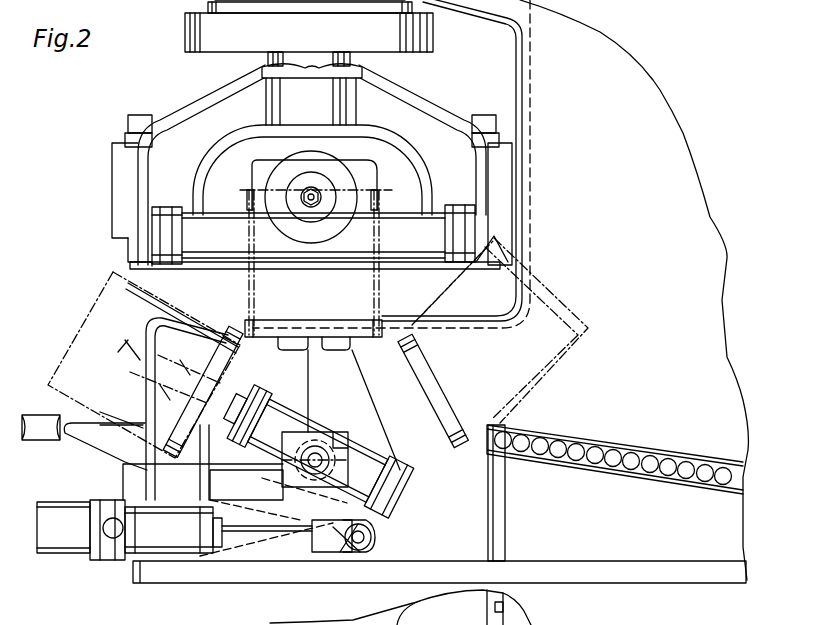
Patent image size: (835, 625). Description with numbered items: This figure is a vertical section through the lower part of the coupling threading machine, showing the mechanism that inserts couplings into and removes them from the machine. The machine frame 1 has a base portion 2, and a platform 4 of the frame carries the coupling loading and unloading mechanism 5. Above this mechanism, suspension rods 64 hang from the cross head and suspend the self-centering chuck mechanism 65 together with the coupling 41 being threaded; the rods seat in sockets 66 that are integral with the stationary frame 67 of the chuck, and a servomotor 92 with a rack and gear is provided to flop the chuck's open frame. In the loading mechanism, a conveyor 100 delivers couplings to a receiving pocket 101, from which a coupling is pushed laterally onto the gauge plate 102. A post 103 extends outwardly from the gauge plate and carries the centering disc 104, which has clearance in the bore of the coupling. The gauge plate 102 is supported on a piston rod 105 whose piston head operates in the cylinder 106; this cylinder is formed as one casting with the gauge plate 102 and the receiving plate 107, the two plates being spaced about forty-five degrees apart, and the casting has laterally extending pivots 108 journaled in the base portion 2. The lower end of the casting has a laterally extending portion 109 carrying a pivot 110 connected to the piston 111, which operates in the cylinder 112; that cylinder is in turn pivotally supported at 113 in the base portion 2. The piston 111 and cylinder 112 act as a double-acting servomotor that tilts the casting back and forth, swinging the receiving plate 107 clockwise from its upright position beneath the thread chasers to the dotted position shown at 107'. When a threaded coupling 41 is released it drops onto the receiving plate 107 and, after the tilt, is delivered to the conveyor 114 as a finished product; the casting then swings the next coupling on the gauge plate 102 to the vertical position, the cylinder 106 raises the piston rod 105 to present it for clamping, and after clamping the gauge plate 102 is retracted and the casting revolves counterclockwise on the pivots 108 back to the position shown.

The machine frame 1 is at (668, 98).
The base portion 2 is at (735, 530).
The platform 4 is at (226, 325).
The coupling loading and unloading mechanism 5 is at (366, 455).
The coupling 41 is at (377, 240).
The suspension rods 64 is at (270, 62).
The self-centering chuck mechanism 65 is at (162, 181).
The sockets 66 is at (335, 87).
The stationary frame 67 is at (126, 225).
The servomotor 92 is at (224, 218).
The conveyor 100 is at (62, 410).
The receiving pocket 101 is at (103, 442).
The gauge plate 102 is at (222, 357).
The post 103 is at (165, 365).
The centering disc 104 is at (112, 370).
The piston rod 105 is at (207, 440).
The cylinder 106 is at (267, 438).
The receiving plate 107 is at (300, 384).
The receiving plate (tilted position) 107' is at (465, 344).
The pivots 108 is at (317, 453).
The laterally extending portion 109 is at (310, 497).
The pivot 110 is at (360, 543).
The piston 111 is at (263, 533).
The cylinder 112 is at (173, 543).
The pivotal support 113 is at (107, 553).
The conveyor 114 is at (647, 470).